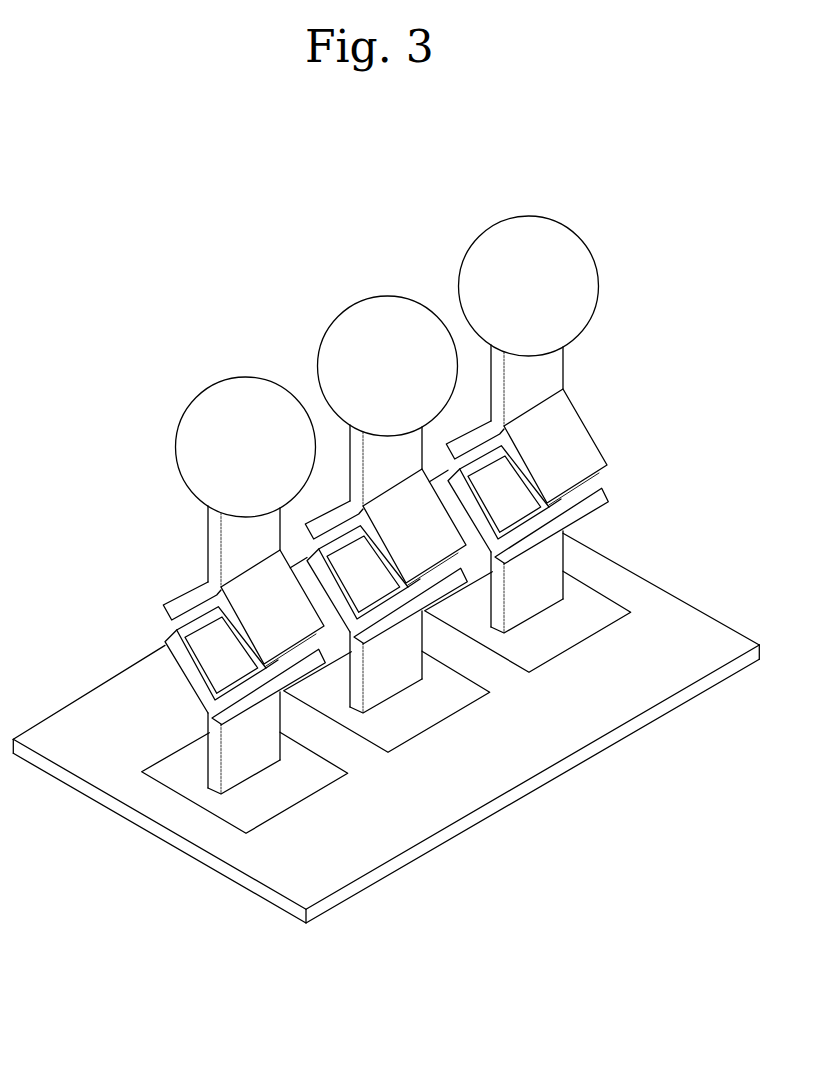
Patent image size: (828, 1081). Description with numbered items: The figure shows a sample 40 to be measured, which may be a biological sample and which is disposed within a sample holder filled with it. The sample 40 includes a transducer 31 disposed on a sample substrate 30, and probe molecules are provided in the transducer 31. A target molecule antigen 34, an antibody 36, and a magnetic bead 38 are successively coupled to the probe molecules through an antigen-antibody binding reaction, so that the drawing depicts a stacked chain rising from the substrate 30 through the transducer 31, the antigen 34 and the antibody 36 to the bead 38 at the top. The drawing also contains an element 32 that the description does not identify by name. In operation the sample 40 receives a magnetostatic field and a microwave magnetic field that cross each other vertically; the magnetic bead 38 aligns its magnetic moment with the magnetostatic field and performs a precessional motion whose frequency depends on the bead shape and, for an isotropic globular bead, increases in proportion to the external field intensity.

The sample substrate 30 is at (702, 623).
The transducer 31 is at (567, 630).
The lower conductive pattern 32 is at (602, 493).
The target molecule antigen 34 is at (512, 490).
The antibody 36 is at (583, 437).
The magnetic bead 38 is at (530, 222).
The sample 40 is at (124, 191).